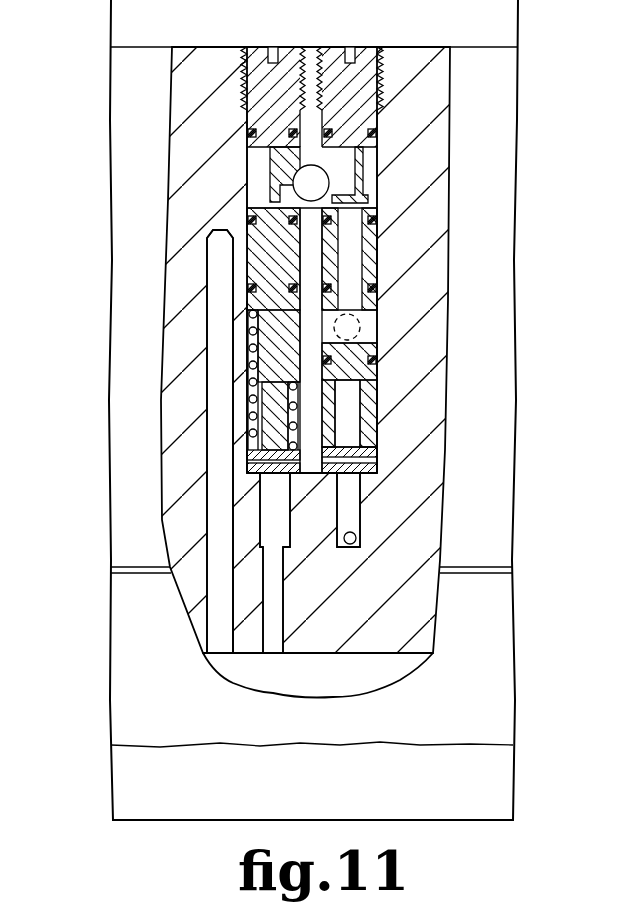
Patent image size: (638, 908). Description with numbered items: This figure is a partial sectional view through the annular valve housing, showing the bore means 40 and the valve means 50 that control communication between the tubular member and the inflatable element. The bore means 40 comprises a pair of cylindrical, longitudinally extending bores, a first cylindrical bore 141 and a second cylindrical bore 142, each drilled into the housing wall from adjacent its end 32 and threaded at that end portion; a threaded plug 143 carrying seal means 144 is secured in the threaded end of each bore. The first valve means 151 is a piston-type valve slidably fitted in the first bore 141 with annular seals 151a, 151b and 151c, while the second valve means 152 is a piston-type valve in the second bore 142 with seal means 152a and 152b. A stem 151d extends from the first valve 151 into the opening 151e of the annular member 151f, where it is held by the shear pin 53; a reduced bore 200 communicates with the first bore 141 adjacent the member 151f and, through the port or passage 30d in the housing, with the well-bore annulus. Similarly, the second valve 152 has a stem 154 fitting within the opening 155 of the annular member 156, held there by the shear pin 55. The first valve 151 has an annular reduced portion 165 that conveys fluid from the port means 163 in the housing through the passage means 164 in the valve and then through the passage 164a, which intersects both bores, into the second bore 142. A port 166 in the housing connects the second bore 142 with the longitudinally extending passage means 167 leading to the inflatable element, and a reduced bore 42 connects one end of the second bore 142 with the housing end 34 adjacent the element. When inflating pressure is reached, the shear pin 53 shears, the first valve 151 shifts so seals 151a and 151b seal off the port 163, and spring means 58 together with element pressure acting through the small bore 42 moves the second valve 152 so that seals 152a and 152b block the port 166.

The end 32 is at (408, 47).
The port or passage 30d is at (438, 537).
The end 34 is at (303, 655).
The threaded plug 143 is at (262, 52).
The seal means 144 is at (248, 133).
The second cylindrical bore 142 is at (246, 186).
The bore means 40 is at (382, 198).
The passage 164a is at (297, 181).
The first cylindrical bore 141 is at (373, 168).
The passage means 164 is at (353, 243).
The valve means 50 is at (380, 265).
The second valve means 152 is at (246, 278).
The seal means 152a is at (249, 220).
The annular seal 151a is at (376, 220).
The seal means 152b is at (249, 289).
The annular seal 151b is at (376, 288).
The port 166 is at (224, 252).
The longitudinally extending passage means 167 is at (218, 341).
The stem 154 is at (259, 358).
The spring means 58 is at (250, 398).
The annular member 156 is at (252, 455).
The shear pin 55 is at (256, 471).
The opening 155 is at (268, 478).
The reduced bore 42 is at (273, 523).
The first valve means 151 is at (373, 373).
The annular reduced portion 165 is at (373, 333).
The port means 163 is at (360, 311).
The annular seal 151c is at (376, 360).
The stem 151d is at (370, 412).
The annular member 151f is at (373, 452).
The shear pin 53 is at (373, 470).
The opening 151e is at (362, 492).
The reduced bore 200 is at (357, 533).